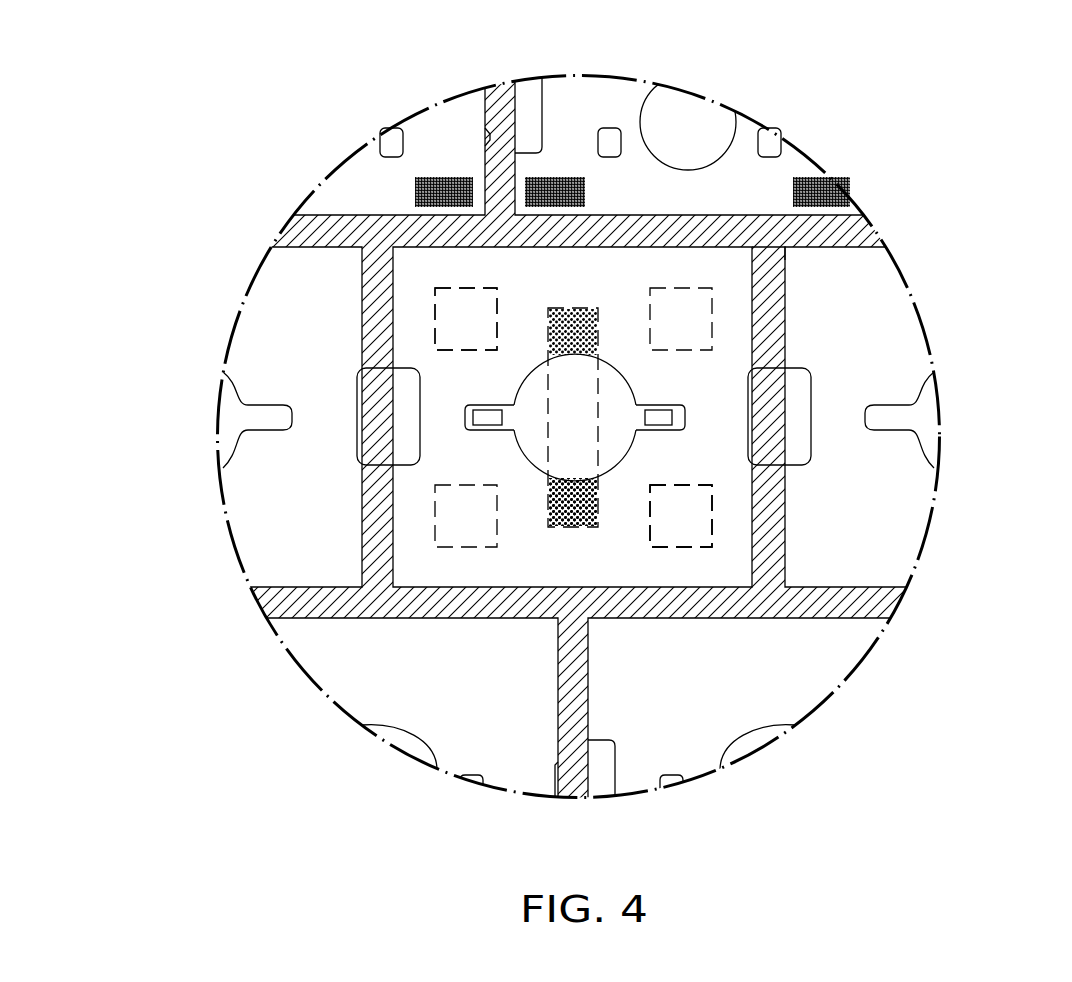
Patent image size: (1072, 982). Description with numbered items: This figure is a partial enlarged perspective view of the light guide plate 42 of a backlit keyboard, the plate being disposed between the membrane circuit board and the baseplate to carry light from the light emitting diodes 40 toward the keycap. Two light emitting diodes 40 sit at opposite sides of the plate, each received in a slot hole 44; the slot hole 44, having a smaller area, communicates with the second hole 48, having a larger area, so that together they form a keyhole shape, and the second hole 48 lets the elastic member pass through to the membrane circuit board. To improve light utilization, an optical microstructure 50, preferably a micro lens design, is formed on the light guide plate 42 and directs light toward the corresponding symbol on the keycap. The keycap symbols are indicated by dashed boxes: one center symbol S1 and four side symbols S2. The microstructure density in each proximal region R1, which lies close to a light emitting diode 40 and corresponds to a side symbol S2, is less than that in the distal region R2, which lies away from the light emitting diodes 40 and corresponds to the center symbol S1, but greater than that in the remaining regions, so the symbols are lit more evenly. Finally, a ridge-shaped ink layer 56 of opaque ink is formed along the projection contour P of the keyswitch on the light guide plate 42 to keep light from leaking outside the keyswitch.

The light guide plate 42 is at (317, 162).
The ridge-shaped ink layer 56 is at (297, 237).
The projection contour P is at (750, 243).
The second hole 48 is at (608, 472).
The slot hole 44 is at (465, 407).
The light emitting diode 40 is at (483, 415).
The proximal region R1 is at (456, 298).
The distal region R2 is at (572, 318).
The center symbol S1 is at (565, 507).
The side symbol S2 is at (435, 318).
The optical microstructure 50 is at (728, 538).